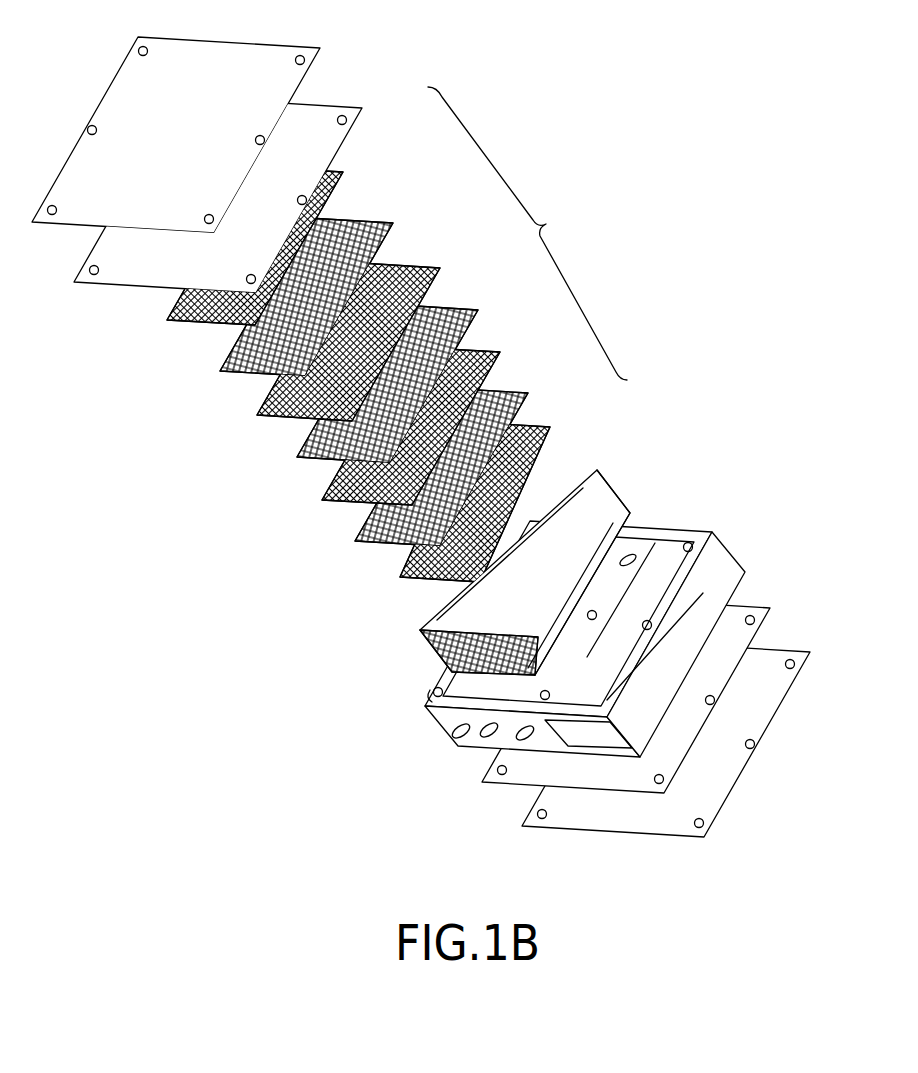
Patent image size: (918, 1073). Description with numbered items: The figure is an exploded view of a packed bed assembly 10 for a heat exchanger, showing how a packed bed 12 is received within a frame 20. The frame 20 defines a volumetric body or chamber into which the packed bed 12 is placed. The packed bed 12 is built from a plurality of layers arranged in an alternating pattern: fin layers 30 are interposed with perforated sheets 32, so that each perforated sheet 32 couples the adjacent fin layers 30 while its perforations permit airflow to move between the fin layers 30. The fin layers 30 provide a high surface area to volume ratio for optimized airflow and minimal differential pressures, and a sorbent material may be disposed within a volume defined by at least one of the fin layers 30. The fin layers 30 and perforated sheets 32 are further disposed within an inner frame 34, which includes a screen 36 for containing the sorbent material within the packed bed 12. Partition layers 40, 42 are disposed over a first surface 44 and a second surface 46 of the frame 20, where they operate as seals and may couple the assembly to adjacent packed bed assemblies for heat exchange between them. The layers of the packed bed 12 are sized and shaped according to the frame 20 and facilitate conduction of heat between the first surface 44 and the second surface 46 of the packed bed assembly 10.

The packed bed assembly 10 is at (650, 69).
The packed bed 12 is at (527, 233).
The frame 20 is at (715, 550).
The fin layers 30 is at (352, 178).
The perforated sheets 32 is at (397, 226).
The inner frame 34 is at (600, 470).
The screen 36 is at (612, 510).
The partition layer 40 is at (328, 130).
The partition layer 42 is at (305, 72).
The first surface 44 is at (430, 695).
The second surface 46 is at (472, 752).